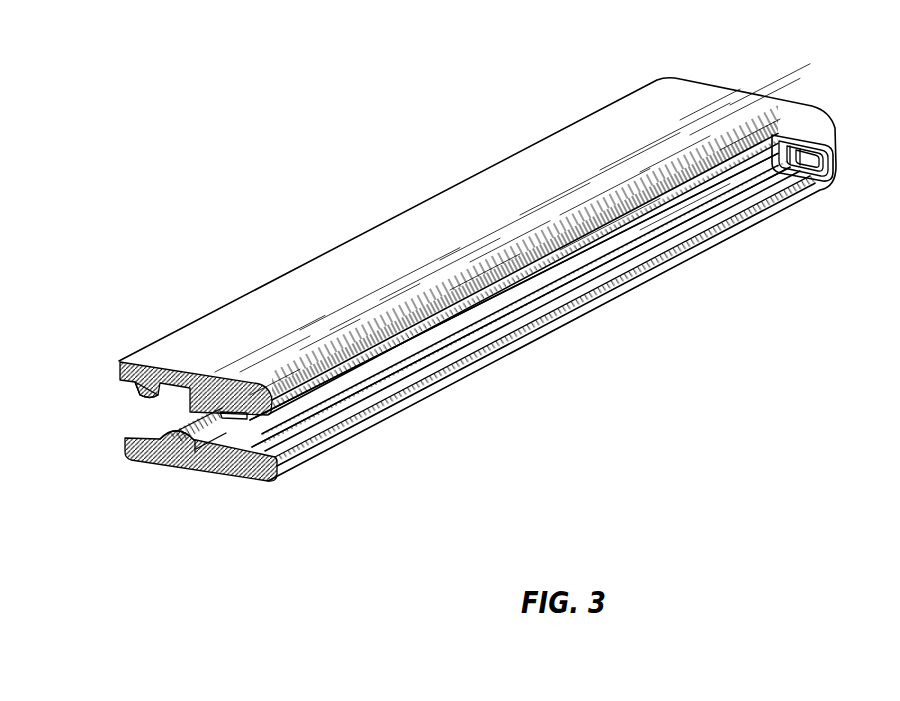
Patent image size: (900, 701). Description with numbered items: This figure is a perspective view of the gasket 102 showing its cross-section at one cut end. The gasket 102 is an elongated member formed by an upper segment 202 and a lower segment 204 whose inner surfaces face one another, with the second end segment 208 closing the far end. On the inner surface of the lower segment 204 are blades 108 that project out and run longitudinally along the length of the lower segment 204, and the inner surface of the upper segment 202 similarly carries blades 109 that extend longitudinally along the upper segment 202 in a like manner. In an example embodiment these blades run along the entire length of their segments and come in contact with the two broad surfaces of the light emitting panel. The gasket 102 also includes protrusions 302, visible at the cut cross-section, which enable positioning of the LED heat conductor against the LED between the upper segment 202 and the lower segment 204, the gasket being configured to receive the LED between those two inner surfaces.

The gasket 102 is at (262, 116).
The upper segment 202 is at (540, 158).
The lower segment 204 is at (630, 352).
The second end segment 208 is at (828, 106).
The blades 108 is at (322, 395).
The blades 109 is at (246, 420).
The protrusions 302 is at (143, 397).